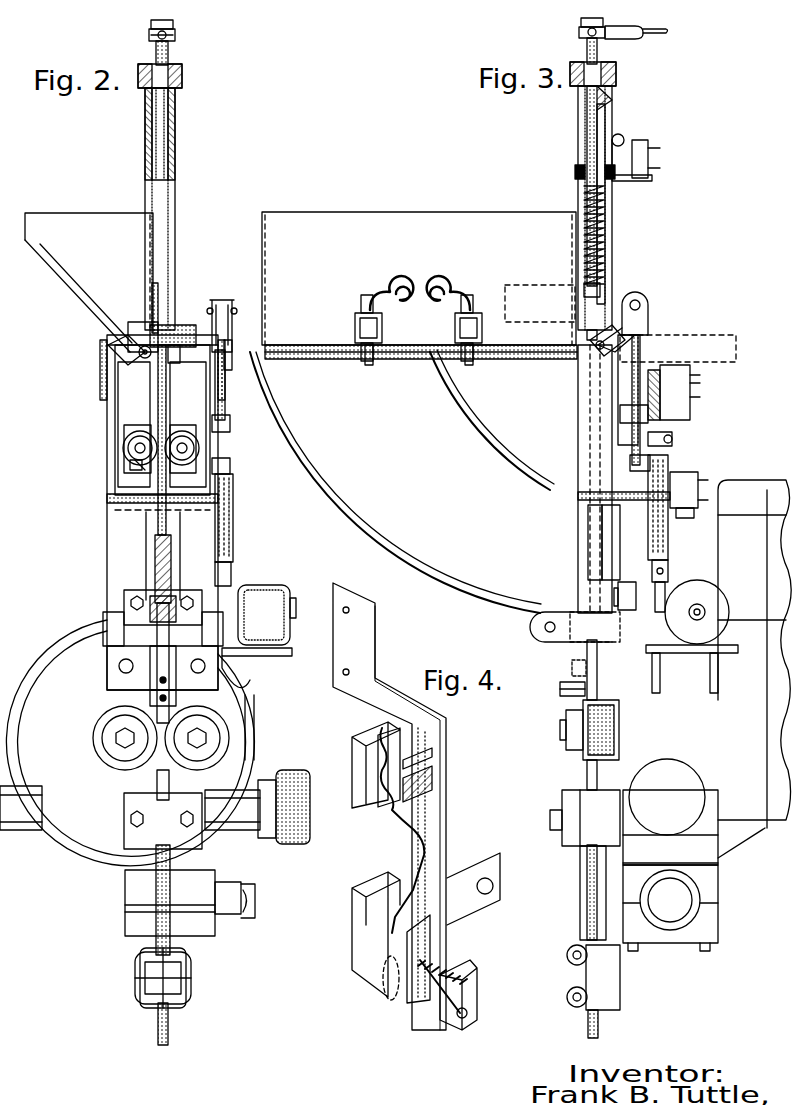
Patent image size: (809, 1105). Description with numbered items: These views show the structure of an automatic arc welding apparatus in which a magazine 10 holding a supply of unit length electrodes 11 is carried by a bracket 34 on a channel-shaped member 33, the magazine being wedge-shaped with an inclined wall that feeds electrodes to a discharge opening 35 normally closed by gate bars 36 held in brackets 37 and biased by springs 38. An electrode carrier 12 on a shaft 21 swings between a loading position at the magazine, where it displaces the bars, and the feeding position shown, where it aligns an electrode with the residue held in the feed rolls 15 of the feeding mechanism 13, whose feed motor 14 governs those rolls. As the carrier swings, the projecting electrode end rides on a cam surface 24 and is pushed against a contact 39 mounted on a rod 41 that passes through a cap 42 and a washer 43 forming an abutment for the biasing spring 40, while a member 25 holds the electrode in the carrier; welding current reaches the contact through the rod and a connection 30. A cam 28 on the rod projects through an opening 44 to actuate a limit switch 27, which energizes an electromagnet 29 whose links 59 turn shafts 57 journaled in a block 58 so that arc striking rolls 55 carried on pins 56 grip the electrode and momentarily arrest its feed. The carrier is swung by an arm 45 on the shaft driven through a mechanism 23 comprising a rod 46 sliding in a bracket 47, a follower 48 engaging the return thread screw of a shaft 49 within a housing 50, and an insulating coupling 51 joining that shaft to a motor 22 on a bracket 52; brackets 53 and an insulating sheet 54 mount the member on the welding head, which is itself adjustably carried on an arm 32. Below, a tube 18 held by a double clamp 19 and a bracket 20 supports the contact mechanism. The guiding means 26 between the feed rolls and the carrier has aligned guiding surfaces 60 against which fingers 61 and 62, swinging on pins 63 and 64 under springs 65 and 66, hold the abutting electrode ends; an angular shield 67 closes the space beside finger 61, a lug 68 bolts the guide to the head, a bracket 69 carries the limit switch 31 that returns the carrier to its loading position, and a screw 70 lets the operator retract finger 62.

In FIG. 2, the magazine 10 is at (57, 218).
In FIG. 3, the magazine 10 is at (410, 216).
In FIG. 2, the unit length electrodes 11 is at (170, 573).
In FIG. 3, the unit length electrodes 11 is at (600, 308).
In FIG. 2, the electrode carrier 12 is at (176, 283).
In FIG. 3, the electrode carrier 12 is at (612, 223).
In FIG. 2, the feeding mechanism 13 is at (60, 640).
In FIG. 3, the feeding mechanism 13 is at (750, 828).
In FIG. 3, the feed motor 14 is at (762, 484).
In FIG. 2, the feed rolls 15 is at (214, 716).
In FIG. 3, the feed rolls 15 is at (568, 712).
In FIG. 2, the tube 18 is at (150, 889).
In FIG. 3, the tube 18 is at (590, 891).
In FIG. 2, the double clamp 19 is at (136, 989).
In FIG. 3, the double clamp 19 is at (620, 969).
In FIG. 2, the bracket 20 is at (125, 815).
In FIG. 3, the bracket 20 is at (566, 836).
In FIG. 2, the shaft 21 is at (230, 366).
In FIG. 3, the shaft 21 is at (607, 351).
In FIG. 2, the motor 22 is at (274, 586).
In FIG. 3, the motor 22 is at (715, 598).
In FIG. 2, the mechanism 23 is at (260, 513).
In FIG. 3, the mechanism 23 is at (697, 547).
In FIG. 2, the cam surface 24 is at (125, 607).
In FIG. 3, the cam surface 24 is at (350, 520).
In FIG. 2, the member 25 is at (150, 420).
In FIG. 3, the member 25 is at (476, 428).
In FIG. 2, the guiding means 26 is at (148, 697).
In FIG. 3, the guiding means 26 is at (560, 689).
In FIG. 3, the limit switch 27 is at (650, 142).
In FIG. 3, the cam 28 is at (612, 98).
In FIG. 3, the electromagnet 29 is at (692, 398).
In FIG. 2, the connection 30 is at (173, 30).
In FIG. 3, the connection 30 is at (605, 24).
In FIG. 3, the limit switch 31 is at (627, 582).
In FIG. 2, the arm 32 is at (250, 892).
In FIG. 3, the arm 32 is at (680, 890).
In FIG. 2, the channel-shaped member 33 is at (108, 401).
In FIG. 3, the channel-shaped member 33 is at (578, 381).
In FIG. 2, the bracket 34 is at (92, 305).
In FIG. 3, the bracket 34 is at (528, 290).
In FIG. 3, the discharge opening 35 is at (326, 358).
In FIG. 2, the bars 36 is at (176, 362).
In FIG. 3, the bars 36 is at (424, 365).
In FIG. 2, the brackets 37 is at (148, 327).
In FIG. 3, the brackets 37 is at (356, 323).
In FIG. 2, the springs 38 is at (152, 290).
In FIG. 3, the springs 38 is at (400, 293).
In FIG. 3, the contact 39 is at (602, 285).
In FIG. 3, the spring 40 is at (606, 258).
In FIG. 2, the rod 41 is at (169, 147).
In FIG. 3, the rod 41 is at (587, 138).
In FIG. 2, the cap 42 is at (183, 72).
In FIG. 3, the cap 42 is at (618, 67).
In FIG. 3, the washer 43 is at (578, 170).
In FIG. 3, the opening 44 is at (606, 116).
In FIG. 2, the arm 45 is at (223, 300).
In FIG. 3, the arm 45 is at (636, 300).
In FIG. 2, the rod 46 is at (226, 399).
In FIG. 3, the rod 46 is at (645, 350).
In FIG. 2, the bracket 47 is at (231, 422).
In FIG. 3, the bracket 47 is at (650, 412).
In FIG. 2, the follower 48 is at (231, 466).
In FIG. 3, the follower 48 is at (662, 456).
In FIG. 3, the shaft 49 is at (676, 519).
In FIG. 2, the housing 50 is at (233, 535).
In FIG. 3, the housing 50 is at (650, 533).
In FIG. 2, the coupling 51 is at (231, 572).
In FIG. 3, the coupling 51 is at (669, 569).
In FIG. 2, the bracket 52 is at (270, 657).
In FIG. 3, the bracket 52 is at (676, 653).
In FIG. 2, the brackets 53 is at (182, 535).
In FIG. 3, the brackets 53 is at (578, 541).
In FIG. 2, the sheet of insulating material 54 is at (107, 498).
In FIG. 3, the sheet of insulating material 54 is at (578, 497).
In FIG. 2, the arc striking rolls 55 is at (130, 450).
In FIG. 2, the pins 56 is at (115, 472).
In FIG. 2, the shafts 57 is at (128, 440).
In FIG. 2, the block 58 is at (186, 426).
In FIG. 3, the links 59 is at (672, 430).
In FIG. 4, the guiding surfaces 60 is at (370, 731).
In FIG. 4, the finger 61 is at (395, 808).
In FIG. 4, the finger 62 is at (400, 998).
In FIG. 4, the pin 63 is at (380, 768).
In FIG. 4, the pin 64 is at (400, 930).
In FIG. 4, the spring 65 is at (430, 778).
In FIG. 4, the spring 66 is at (436, 998).
In FIG. 4, the angular shield 67 is at (425, 757).
In FIG. 2, the lug 68 is at (118, 667).
In FIG. 4, the lug 68 is at (462, 872).
In FIG. 4, the bracket 69 is at (375, 658).
In FIG. 4, the screw 70 is at (458, 985).